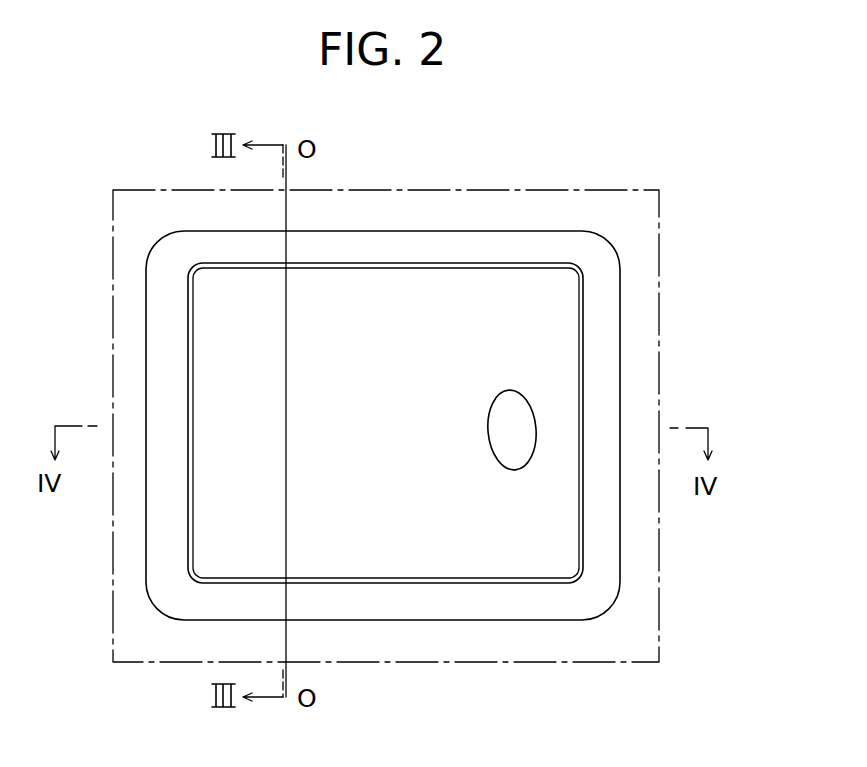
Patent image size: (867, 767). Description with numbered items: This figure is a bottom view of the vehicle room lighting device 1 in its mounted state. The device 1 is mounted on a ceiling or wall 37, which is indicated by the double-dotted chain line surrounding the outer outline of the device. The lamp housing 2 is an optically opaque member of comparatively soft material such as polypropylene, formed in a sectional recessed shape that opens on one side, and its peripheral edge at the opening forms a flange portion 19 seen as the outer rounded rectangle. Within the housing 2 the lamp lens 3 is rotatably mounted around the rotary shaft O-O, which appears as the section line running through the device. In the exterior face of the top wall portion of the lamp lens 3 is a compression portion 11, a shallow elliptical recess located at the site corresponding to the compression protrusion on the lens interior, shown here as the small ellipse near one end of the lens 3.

The vehicle room lighting device 1 is at (446, 375).
The lamp housing 2 is at (437, 230).
The lamp lens 3 is at (340, 263).
The compression portion 11 is at (532, 405).
The flange portion 19 is at (467, 356).
The ceiling or wall 37 is at (633, 638).